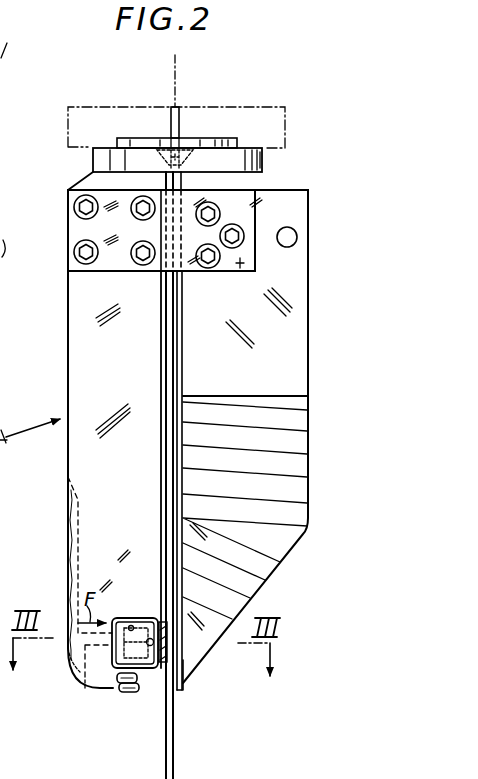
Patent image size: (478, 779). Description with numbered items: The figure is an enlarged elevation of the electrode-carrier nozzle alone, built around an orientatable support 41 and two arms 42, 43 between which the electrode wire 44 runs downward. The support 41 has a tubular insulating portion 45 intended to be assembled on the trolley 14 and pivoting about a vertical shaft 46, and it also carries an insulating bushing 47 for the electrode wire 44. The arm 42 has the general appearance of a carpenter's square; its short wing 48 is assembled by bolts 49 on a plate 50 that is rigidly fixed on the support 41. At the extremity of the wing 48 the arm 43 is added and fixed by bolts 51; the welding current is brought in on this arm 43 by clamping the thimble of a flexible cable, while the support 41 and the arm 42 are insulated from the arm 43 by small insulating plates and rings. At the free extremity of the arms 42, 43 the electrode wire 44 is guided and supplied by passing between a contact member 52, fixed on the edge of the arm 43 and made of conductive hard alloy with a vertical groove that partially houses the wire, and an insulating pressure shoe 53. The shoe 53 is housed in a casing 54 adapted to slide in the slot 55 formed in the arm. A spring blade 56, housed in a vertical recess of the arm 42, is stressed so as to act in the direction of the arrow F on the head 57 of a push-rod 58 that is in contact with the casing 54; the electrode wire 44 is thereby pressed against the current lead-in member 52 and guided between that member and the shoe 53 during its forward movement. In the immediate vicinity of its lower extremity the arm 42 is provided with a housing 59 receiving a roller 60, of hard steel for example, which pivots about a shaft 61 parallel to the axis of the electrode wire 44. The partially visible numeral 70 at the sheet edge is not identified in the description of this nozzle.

The trolley 14 is at (66, 115).
The adjacent component 70 is at (12, 78).
The orientatable support 41 is at (268, 166).
The arm 42 is at (67, 341).
The arm 43 is at (308, 353).
The electrode wire 44 is at (174, 749).
The tubular insulating portion 45 is at (92, 160).
The vertical shaft 46 is at (174, 63).
The insulating bushing 47 is at (203, 140).
The short wing 48 is at (250, 201).
The bolts 49 is at (82, 251).
The plate 50 is at (76, 184).
The bolts 51 is at (239, 264).
The contact member 52 is at (178, 687).
The insulating pressure shoe 53 is at (161, 630).
The casing 54 is at (168, 652).
The slot 55 is at (130, 626).
The spring blade 56 is at (62, 546).
The head 57 is at (67, 673).
The push-rod 58 is at (80, 684).
The housing 59 is at (122, 687).
The roller 60 is at (137, 687).
The shaft 61 is at (128, 690).